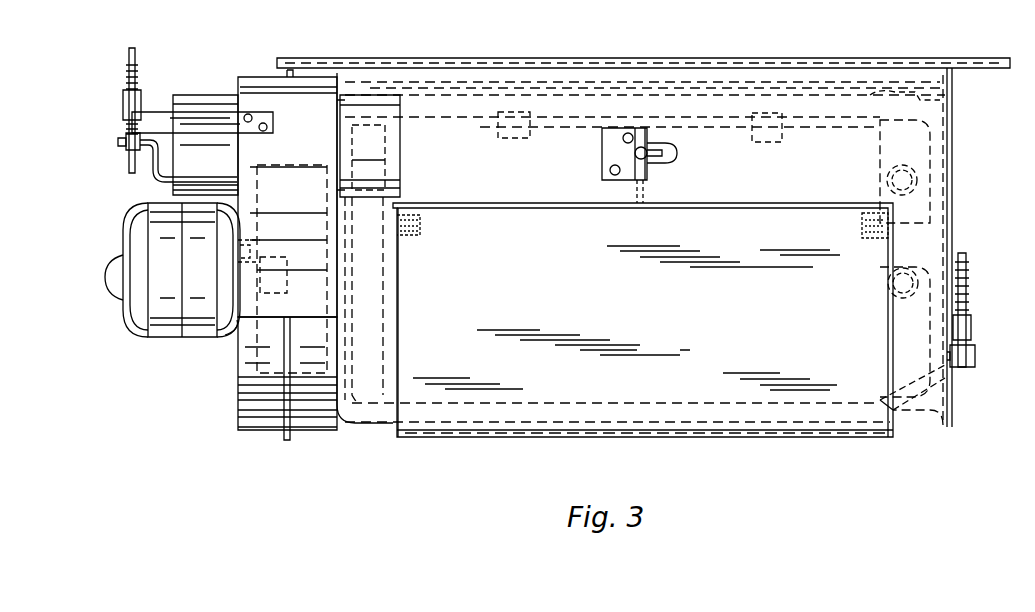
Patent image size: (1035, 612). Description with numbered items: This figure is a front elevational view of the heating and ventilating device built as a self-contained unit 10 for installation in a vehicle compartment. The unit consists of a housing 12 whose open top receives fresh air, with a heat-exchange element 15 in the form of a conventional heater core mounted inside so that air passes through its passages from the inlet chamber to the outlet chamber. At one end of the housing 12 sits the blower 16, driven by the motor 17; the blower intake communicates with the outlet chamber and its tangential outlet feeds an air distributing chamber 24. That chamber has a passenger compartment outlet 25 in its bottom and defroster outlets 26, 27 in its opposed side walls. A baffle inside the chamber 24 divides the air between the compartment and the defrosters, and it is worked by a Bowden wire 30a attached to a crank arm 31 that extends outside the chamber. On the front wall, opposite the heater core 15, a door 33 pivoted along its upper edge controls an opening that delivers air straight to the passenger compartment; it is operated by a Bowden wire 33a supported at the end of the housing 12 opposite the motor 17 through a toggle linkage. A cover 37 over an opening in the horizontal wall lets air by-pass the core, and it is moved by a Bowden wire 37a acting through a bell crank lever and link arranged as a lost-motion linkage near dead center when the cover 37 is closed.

The self-contained unit 10 is at (648, 440).
The housing 12 is at (950, 103).
The heat-exchange element 15 is at (930, 203).
The blower 16 is at (245, 350).
The motor 17 is at (122, 310).
The air distributing chamber 24 is at (262, 90).
The passenger compartment outlet 25 is at (225, 335).
The defroster outlet 26 is at (206, 95).
The defroster outlet 27 is at (400, 185).
The Bowden wire 30a is at (124, 82).
The crank arm 31 is at (152, 180).
The door 33 is at (865, 400).
The Bowden wire 33a is at (968, 288).
The cover 37 is at (436, 88).
The Bowden wire 37a is at (655, 168).